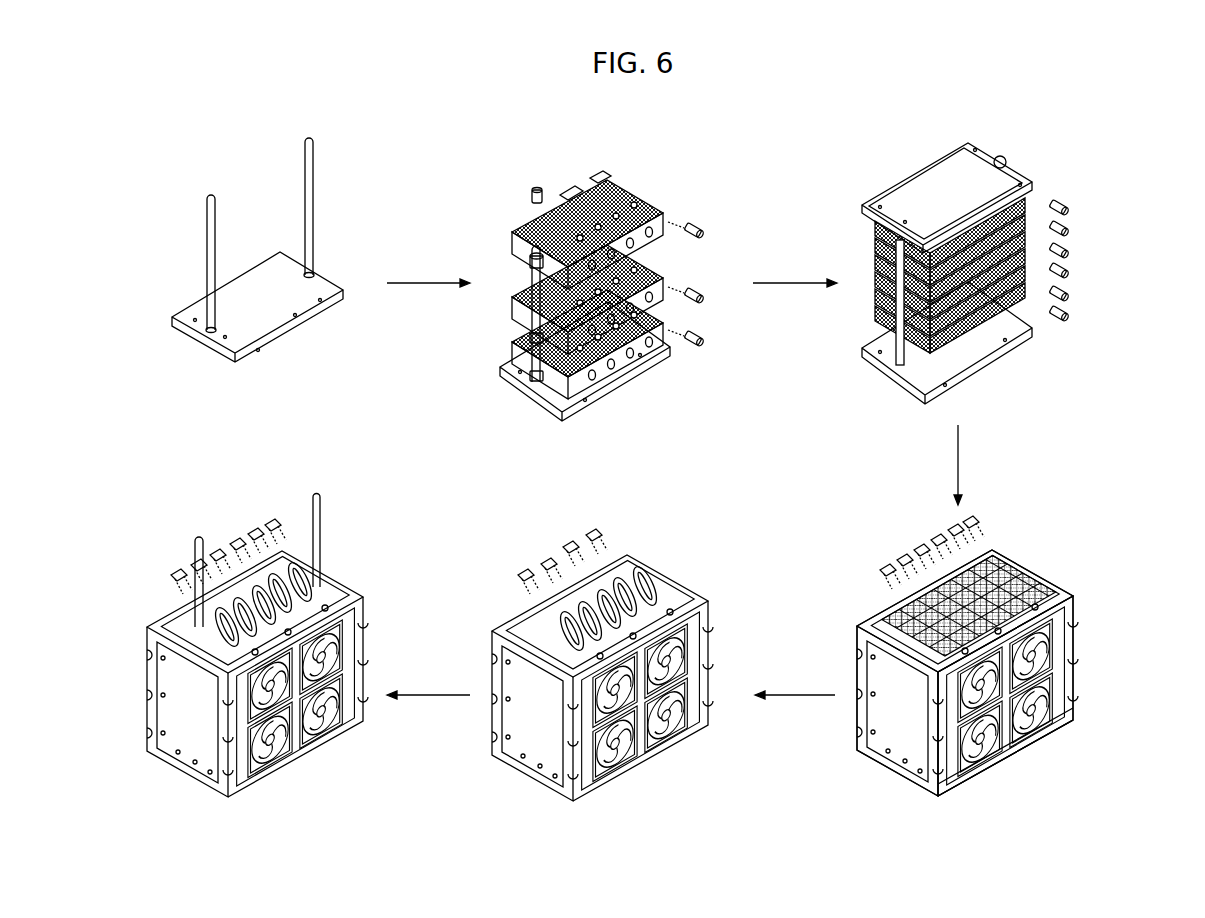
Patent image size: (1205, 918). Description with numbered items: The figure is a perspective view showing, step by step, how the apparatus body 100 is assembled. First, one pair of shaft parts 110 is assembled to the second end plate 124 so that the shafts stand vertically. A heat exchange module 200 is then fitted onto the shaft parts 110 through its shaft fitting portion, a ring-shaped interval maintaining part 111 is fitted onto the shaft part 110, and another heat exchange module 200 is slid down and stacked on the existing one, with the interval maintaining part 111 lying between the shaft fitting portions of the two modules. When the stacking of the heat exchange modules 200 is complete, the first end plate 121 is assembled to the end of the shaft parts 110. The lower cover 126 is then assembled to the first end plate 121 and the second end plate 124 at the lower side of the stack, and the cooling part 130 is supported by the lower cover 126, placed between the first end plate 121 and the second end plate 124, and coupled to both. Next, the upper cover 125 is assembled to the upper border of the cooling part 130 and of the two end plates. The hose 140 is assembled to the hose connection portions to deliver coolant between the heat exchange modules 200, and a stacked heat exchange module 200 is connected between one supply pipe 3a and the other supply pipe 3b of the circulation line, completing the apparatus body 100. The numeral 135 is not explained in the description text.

The apparatus body 100 is at (274, 663).
The shaft part 110 is at (197, 198).
The interval maintaining part 111 is at (538, 190).
The first end plate 121 is at (933, 190).
The second end plate 124 is at (293, 317).
The upper cover 125 is at (657, 570).
The lower cover 126 is at (968, 783).
The cooling part 130 is at (1078, 672).
The connector 135 is at (250, 527).
The hose 140 is at (563, 565).
The heat exchange module 200 is at (583, 178).
The supply pipe 3a is at (193, 562).
The supply pipe 3b is at (323, 523).